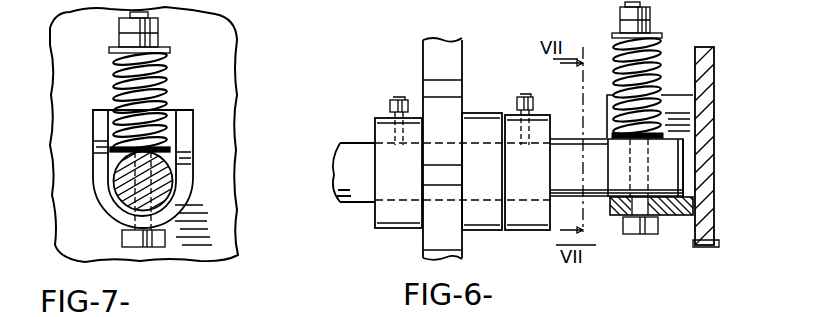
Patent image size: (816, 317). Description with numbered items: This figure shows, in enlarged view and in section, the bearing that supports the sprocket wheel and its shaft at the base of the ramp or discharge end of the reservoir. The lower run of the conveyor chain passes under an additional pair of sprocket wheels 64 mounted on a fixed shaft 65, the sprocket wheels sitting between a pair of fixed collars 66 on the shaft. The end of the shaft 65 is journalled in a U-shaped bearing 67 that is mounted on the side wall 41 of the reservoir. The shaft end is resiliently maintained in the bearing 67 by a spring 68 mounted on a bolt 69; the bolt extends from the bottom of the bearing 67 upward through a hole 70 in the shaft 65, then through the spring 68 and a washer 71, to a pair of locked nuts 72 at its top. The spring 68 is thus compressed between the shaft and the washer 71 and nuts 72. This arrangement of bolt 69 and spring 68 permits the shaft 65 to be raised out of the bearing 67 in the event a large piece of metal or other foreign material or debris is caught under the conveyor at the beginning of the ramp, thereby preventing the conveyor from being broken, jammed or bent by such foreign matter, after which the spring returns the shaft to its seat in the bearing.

In FIG. 7, the side wall 41 is at (225, 70).
In FIG. 6, the side wall 41 is at (716, 127).
In FIG. 6, the sprocket wheels 64 is at (460, 101).
In FIG. 7, the shaft 65 is at (167, 181).
In FIG. 6, the shaft 65 is at (357, 153).
In FIG. 6, the collars 66 is at (540, 128).
In FIG. 7, the U-shaped bearing 67 is at (190, 127).
In FIG. 6, the U-shaped bearing 67 is at (687, 108).
In FIG. 7, the spring 68 is at (169, 71).
In FIG. 6, the spring 68 is at (658, 53).
In FIG. 7, the bolt 69 is at (122, 237).
In FIG. 6, the bolt 69 is at (647, 236).
In FIG. 7, the hole 70 is at (183, 207).
In FIG. 6, the hole 70 is at (648, 168).
In FIG. 7, the washer 71 is at (170, 49).
In FIG. 7, the locked nuts 72 is at (158, 40).
In FIG. 6, the locked nuts 72 is at (650, 24).